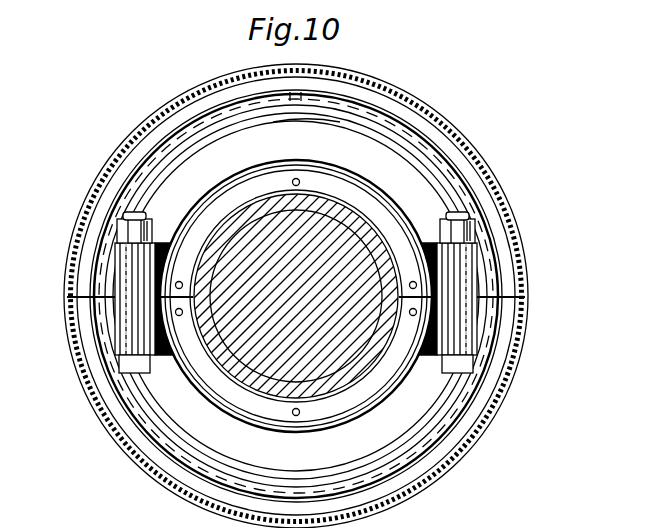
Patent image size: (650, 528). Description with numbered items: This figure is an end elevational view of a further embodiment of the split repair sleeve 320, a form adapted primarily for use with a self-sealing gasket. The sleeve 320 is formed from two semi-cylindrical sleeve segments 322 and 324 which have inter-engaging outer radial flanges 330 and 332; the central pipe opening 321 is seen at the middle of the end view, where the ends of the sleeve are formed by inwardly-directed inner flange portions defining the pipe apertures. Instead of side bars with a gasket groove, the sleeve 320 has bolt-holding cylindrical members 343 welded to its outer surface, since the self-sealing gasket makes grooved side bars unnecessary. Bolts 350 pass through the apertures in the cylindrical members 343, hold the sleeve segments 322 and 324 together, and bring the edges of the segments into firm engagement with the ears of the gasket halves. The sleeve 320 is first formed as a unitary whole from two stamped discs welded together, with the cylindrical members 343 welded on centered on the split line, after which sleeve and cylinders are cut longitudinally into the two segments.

The sleeve 320 is at (417, 158).
The central hub 321 is at (343, 215).
The sleeve segment 322 is at (178, 165).
The sleeve segment 324 is at (160, 432).
The outer radial flange 330 is at (385, 82).
The outer radial flange 332 is at (415, 113).
The bolt-holding cylindrical member 343 is at (477, 287).
The bolt 350 is at (123, 213).